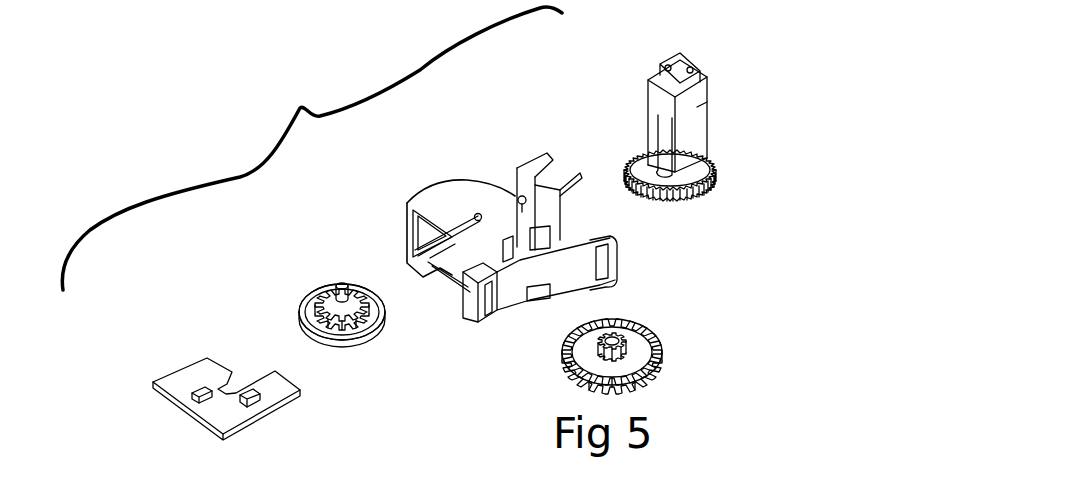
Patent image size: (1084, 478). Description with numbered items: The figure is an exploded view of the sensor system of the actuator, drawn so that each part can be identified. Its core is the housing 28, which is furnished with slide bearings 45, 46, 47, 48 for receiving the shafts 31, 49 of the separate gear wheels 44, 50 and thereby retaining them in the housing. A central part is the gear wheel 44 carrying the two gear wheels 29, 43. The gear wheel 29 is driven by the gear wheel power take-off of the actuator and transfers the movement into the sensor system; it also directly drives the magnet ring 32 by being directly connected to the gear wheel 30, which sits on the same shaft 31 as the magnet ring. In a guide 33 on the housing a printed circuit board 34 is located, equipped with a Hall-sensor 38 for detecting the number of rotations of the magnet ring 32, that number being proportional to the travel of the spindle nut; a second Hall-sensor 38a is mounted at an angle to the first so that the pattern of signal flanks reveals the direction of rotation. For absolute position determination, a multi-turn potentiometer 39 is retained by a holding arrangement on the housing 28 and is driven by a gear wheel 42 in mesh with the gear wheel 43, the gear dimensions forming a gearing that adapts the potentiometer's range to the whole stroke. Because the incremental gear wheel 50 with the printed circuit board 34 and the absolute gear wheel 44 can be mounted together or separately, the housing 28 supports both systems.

The housing 28 is at (452, 195).
The gear wheel 29 is at (568, 372).
The gear wheel 30 is at (370, 311).
The shaft 31 is at (341, 286).
The magnet ring 32 is at (303, 332).
The guide 33 is at (417, 255).
The printed circuit board 34 is at (197, 372).
The Hall-sensor 38 is at (190, 398).
The Hall-sensor 38a is at (260, 404).
The potentiometer 39 is at (697, 87).
The gear wheel 42 is at (712, 192).
The gear wheel 43 is at (627, 350).
The gear wheel 44 is at (667, 337).
The slide bearing 45 is at (478, 213).
The slide bearing 46 is at (445, 282).
The slide bearing 47 is at (472, 315).
The slide bearing 48 is at (500, 317).
The shaft 49 is at (620, 329).
The gear wheel 50 is at (308, 290).